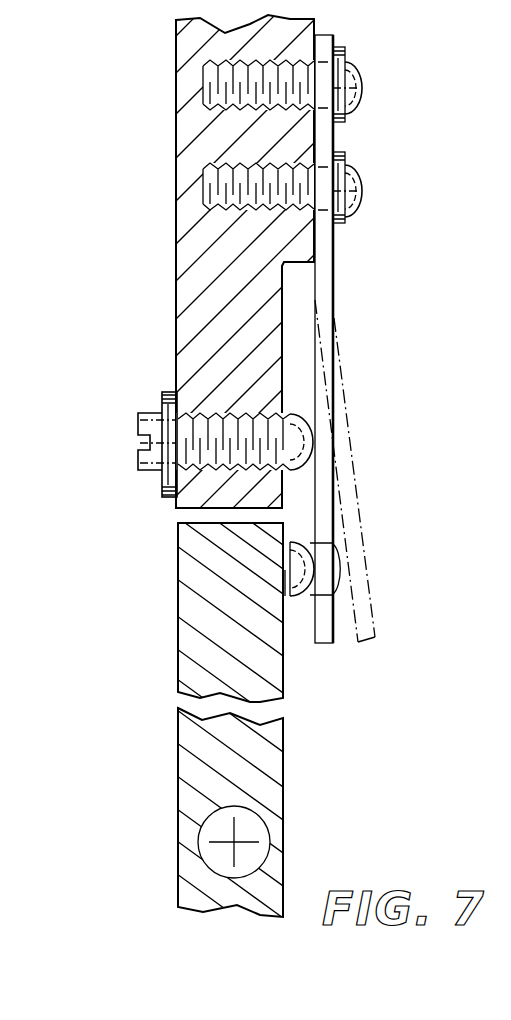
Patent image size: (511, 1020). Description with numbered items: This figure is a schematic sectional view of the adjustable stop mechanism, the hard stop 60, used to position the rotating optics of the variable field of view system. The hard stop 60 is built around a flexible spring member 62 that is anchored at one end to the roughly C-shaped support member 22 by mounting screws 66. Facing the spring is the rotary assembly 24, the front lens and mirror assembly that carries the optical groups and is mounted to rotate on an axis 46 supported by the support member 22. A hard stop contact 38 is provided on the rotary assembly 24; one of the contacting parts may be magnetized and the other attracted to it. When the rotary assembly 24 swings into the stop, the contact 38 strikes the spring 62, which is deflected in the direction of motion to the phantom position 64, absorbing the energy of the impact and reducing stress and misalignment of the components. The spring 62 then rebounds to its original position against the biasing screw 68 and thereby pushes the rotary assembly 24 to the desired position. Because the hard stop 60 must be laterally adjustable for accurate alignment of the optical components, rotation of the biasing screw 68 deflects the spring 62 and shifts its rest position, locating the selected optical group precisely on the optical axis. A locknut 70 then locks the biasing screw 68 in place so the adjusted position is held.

The hard stop 60 is at (140, 182).
The support member 22 is at (202, 308).
The rotary assembly 24 is at (210, 593).
The hard stop contact 38 is at (288, 598).
The axis 46 is at (253, 830).
The flexible spring member 62 is at (333, 630).
The phantom position 64 is at (362, 578).
The mounting screws 66 is at (358, 165).
The biasing screw 68 is at (143, 415).
The locknut 70 is at (161, 488).